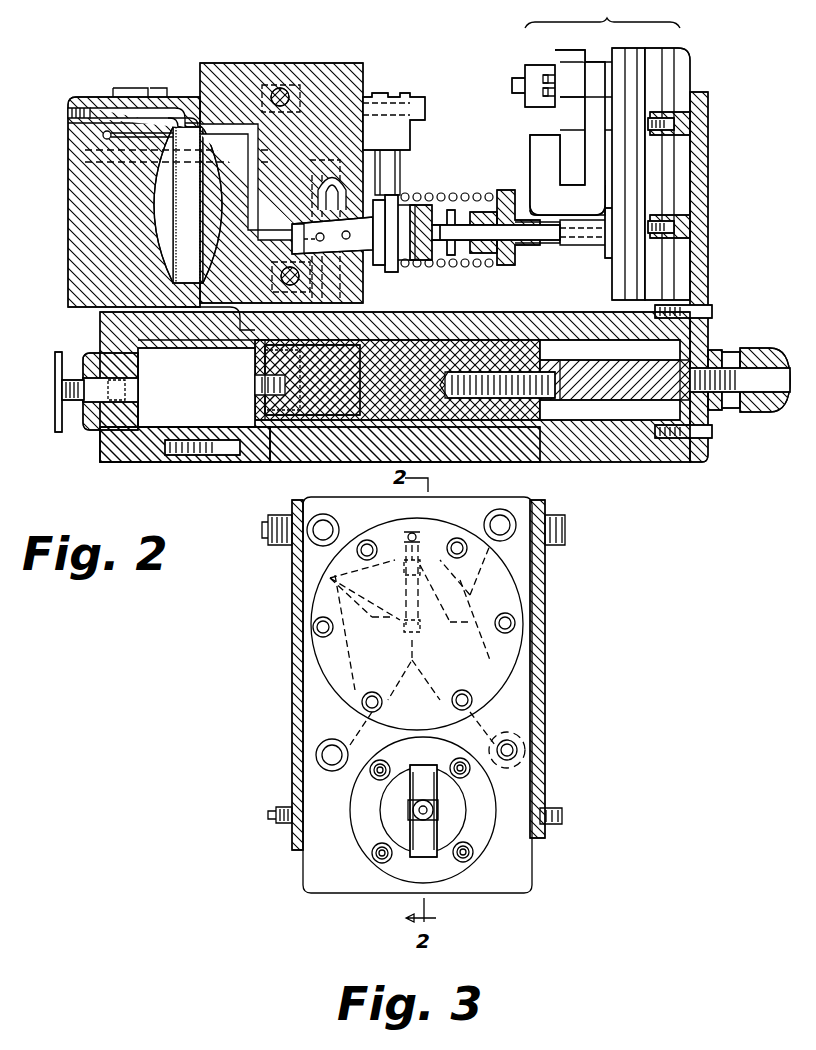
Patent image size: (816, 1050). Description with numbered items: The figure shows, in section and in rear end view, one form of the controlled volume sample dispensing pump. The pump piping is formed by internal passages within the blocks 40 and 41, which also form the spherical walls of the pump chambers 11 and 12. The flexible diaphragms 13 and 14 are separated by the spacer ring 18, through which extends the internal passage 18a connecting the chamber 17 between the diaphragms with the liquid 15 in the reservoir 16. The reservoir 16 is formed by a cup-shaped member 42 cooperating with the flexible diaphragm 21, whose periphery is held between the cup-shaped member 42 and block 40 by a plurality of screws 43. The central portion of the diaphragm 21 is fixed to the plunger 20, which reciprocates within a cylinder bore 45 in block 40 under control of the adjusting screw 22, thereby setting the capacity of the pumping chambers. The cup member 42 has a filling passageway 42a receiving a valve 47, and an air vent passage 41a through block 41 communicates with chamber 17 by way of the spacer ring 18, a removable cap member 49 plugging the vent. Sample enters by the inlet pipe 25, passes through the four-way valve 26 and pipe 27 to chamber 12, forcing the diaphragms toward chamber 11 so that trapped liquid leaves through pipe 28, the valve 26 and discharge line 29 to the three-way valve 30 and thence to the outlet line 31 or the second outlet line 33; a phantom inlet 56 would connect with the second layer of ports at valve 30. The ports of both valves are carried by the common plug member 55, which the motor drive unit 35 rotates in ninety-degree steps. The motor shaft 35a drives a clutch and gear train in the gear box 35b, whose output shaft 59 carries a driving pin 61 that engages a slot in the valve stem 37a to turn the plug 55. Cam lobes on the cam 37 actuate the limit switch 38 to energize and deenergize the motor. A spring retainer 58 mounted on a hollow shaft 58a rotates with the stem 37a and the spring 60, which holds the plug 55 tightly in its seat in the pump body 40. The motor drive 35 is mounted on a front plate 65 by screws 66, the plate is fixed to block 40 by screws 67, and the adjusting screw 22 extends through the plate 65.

In FIG. 2, the pump chamber 11 is at (165, 245).
In FIG. 2, the pump chamber 12 is at (225, 240).
In FIG. 2, the flexible diaphragm 13 is at (175, 228).
In FIG. 2, the flexible diaphragm 14 is at (203, 217).
In FIG. 2, the liquid 15 is at (148, 418).
In FIG. 2, the reservoir 16 is at (178, 418).
In FIG. 2, the chamber 17 is at (198, 193).
In FIG. 2, the spacer ring 18 is at (185, 98).
In FIG. 2, the internal passage 18a is at (228, 330).
In FIG. 2, the plunger 20 is at (383, 408).
In FIG. 2, the flexible diaphragm 21 is at (255, 427).
In FIG. 2, the adjusting screw 22 is at (762, 400).
In FIG. 2, the inlet pipe 25 is at (248, 330).
In FIG. 3, the inlet pipe 25 is at (350, 745).
In FIG. 2, the four-way valve 26 is at (375, 262).
In FIG. 2, the pipe 27 is at (263, 167).
In FIG. 3, the pipe 27 is at (406, 590).
In FIG. 2, the pipe 28 is at (85, 152).
In FIG. 3, the pipe 28 is at (388, 632).
In FIG. 2, the discharge line 29 is at (395, 175).
In FIG. 2, the three-way valve 30 is at (392, 262).
In FIG. 3, the outlet line 31 is at (320, 537).
In FIG. 3, the outlet line 33 is at (506, 527).
In FIG. 2, the motor drive unit 35 is at (602, 107).
In FIG. 2, the motor shaft 35a is at (514, 85).
In FIG. 2, the gear box 35b is at (637, 60).
In FIG. 2, the cam 37 is at (425, 262).
In FIG. 2, the valve stem 37a is at (455, 262).
In FIG. 2, the limit switch 38 is at (395, 105).
In FIG. 2, the block 40 is at (258, 80).
In FIG. 2, the block 41 is at (68, 222).
In FIG. 2, the air vent passage 41a is at (105, 97).
In FIG. 2, the cup-shaped member 42 is at (108, 425).
In FIG. 3, the cup-shaped member 42 is at (480, 825).
In FIG. 2, the filling passageway 42a is at (113, 385).
In FIG. 2, the screws 43 is at (195, 456).
In FIG. 3, the screws 43 is at (470, 770).
In FIG. 2, the cylinder bore 45 is at (313, 420).
In FIG. 2, the valve 47 is at (78, 392).
In FIG. 3, the valve 47 is at (432, 790).
In FIG. 2, the removable cap member 49 is at (68, 112).
In FIG. 3, the removable cap member 49 is at (416, 535).
In FIG. 2, the plug member 55 is at (308, 228).
In FIG. 3, the inlet 56 is at (518, 752).
In FIG. 2, the spring retainer 58 is at (503, 192).
In FIG. 2, the hollow shaft 58a is at (580, 245).
In FIG. 2, the output shaft 59 is at (530, 245).
In FIG. 2, the spring 60 is at (487, 262).
In FIG. 2, the driving pin 61 is at (445, 200).
In FIG. 2, the front plate 65 is at (695, 203).
In FIG. 2, the screws 66 is at (700, 118).
In FIG. 2, the screws 67 is at (708, 306).